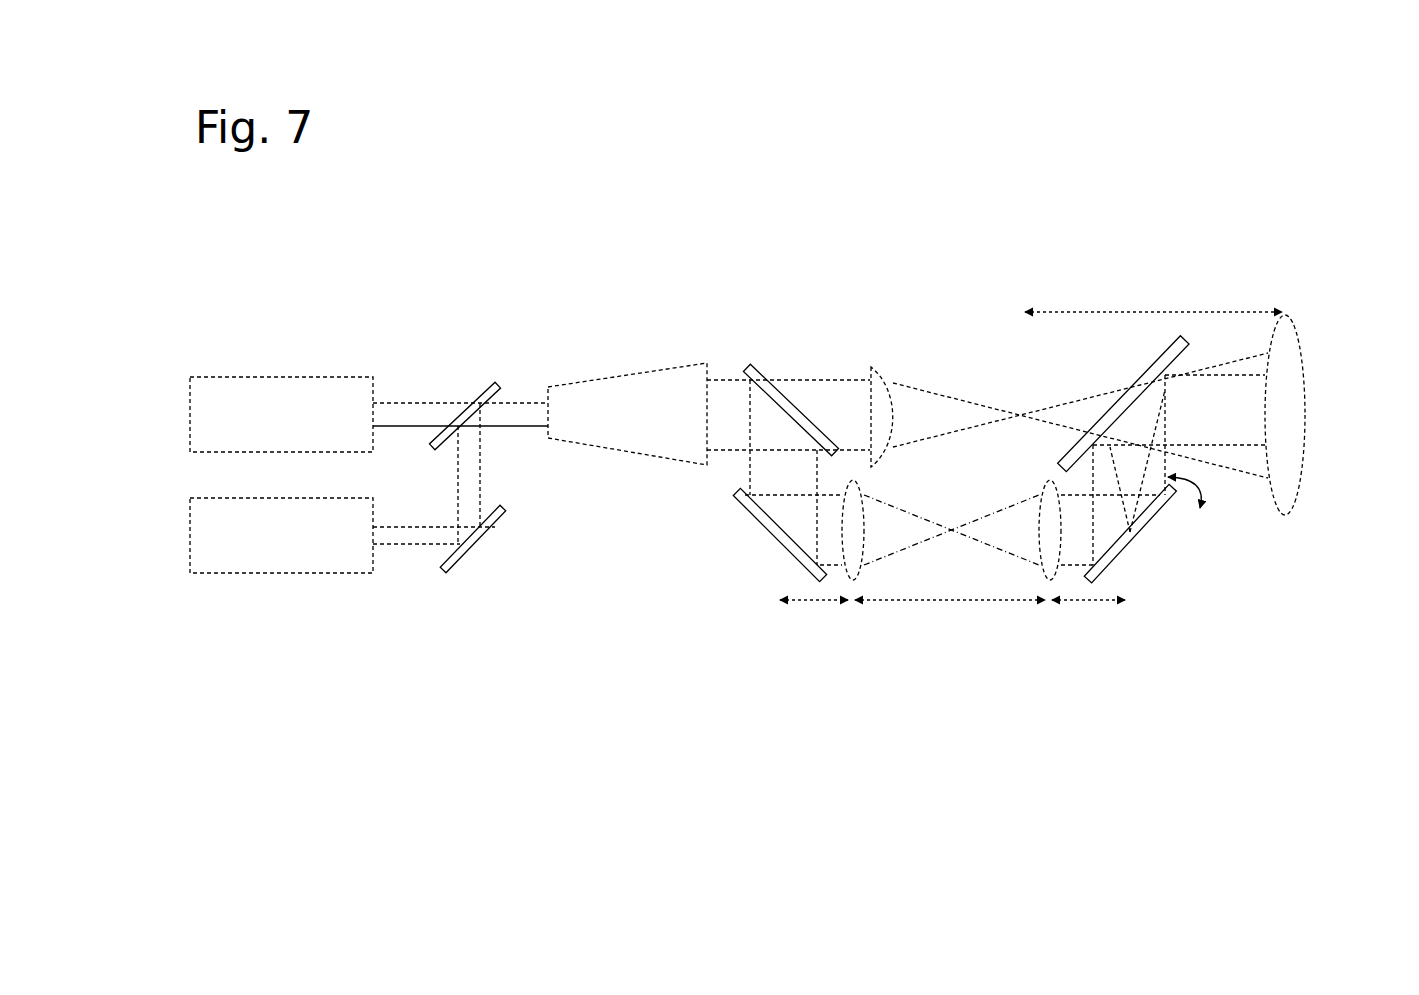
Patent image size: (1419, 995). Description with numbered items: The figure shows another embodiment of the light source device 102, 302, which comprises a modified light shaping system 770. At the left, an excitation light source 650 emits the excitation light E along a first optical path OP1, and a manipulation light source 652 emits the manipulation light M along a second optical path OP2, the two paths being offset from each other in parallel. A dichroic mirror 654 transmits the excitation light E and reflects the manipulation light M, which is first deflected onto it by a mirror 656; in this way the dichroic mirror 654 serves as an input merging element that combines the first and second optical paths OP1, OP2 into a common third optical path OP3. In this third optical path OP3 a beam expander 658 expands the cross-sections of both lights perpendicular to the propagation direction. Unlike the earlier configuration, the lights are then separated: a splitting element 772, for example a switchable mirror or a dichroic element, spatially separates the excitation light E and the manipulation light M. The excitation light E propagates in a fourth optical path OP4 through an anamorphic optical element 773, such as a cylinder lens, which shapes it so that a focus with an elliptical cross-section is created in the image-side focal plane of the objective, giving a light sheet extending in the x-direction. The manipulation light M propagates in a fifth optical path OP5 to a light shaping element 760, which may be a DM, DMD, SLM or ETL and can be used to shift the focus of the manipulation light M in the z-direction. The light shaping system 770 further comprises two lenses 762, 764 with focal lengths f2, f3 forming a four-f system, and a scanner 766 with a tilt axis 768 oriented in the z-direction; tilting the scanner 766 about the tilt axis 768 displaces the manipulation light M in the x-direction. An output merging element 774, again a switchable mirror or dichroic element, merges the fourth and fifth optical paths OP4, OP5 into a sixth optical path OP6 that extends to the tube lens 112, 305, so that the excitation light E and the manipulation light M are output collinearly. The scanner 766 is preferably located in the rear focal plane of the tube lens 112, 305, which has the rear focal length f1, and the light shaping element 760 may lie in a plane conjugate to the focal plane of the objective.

The excitation light source 650 is at (190, 415).
The manipulation light source 652 is at (190, 535).
The dichroic mirror 654 is at (495, 383).
The mirror 656 is at (495, 527).
The beam expander 658 is at (693, 362).
The light shaping element 760 is at (790, 557).
The lens 762 is at (862, 568).
The lens 764 is at (1040, 485).
The scanner 766 is at (1132, 548).
The tilt axis 768 is at (1135, 530).
The light shaping system 770 is at (824, 177).
The splitting element 772 is at (790, 403).
The anamorphic optical element 773 is at (882, 368).
The output merging element 774 is at (1118, 405).
The tube lens 112 is at (1342, 419).
The tube lens 305 is at (1290, 505).
The light source device 102 is at (310, 678).
The light source device 302 is at (378, 638).
The first optical path OP1 is at (388, 412).
The second optical path OP2 is at (383, 530).
The third optical path OP3 is at (725, 380).
The fourth optical path OP4 is at (825, 377).
The fifth optical path OP5 is at (747, 470).
The sixth optical path OP6 is at (1200, 370).
The excitation light E is at (417, 428).
The manipulation light M is at (425, 547).
The rear focal length f1 is at (1153, 290).
The focal length f2 is at (810, 605).
The focal length f3 is at (1095, 605).